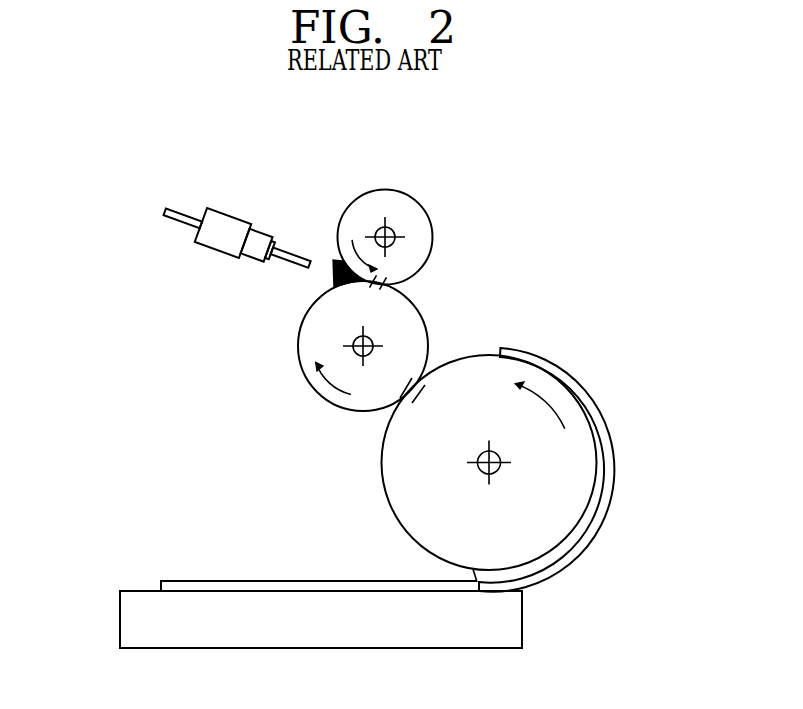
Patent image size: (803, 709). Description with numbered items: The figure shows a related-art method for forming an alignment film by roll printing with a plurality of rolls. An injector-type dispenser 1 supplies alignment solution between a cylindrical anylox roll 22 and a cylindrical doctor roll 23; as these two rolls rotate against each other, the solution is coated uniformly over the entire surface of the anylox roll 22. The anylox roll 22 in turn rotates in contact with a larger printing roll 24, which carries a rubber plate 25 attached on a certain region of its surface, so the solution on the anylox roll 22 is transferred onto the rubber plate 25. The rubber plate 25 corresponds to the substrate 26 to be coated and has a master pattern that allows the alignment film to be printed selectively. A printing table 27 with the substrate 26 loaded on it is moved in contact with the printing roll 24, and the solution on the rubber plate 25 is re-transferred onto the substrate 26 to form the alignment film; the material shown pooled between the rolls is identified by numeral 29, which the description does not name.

The dispenser 1 is at (221, 210).
The anylox roll 22 is at (308, 362).
The doctor roll 23 is at (402, 202).
The printing roll 24 is at (400, 502).
The rubber plate 25 is at (610, 448).
The substrate 26 is at (162, 585).
The printing table 27 is at (128, 616).
The toner 29 is at (333, 260).